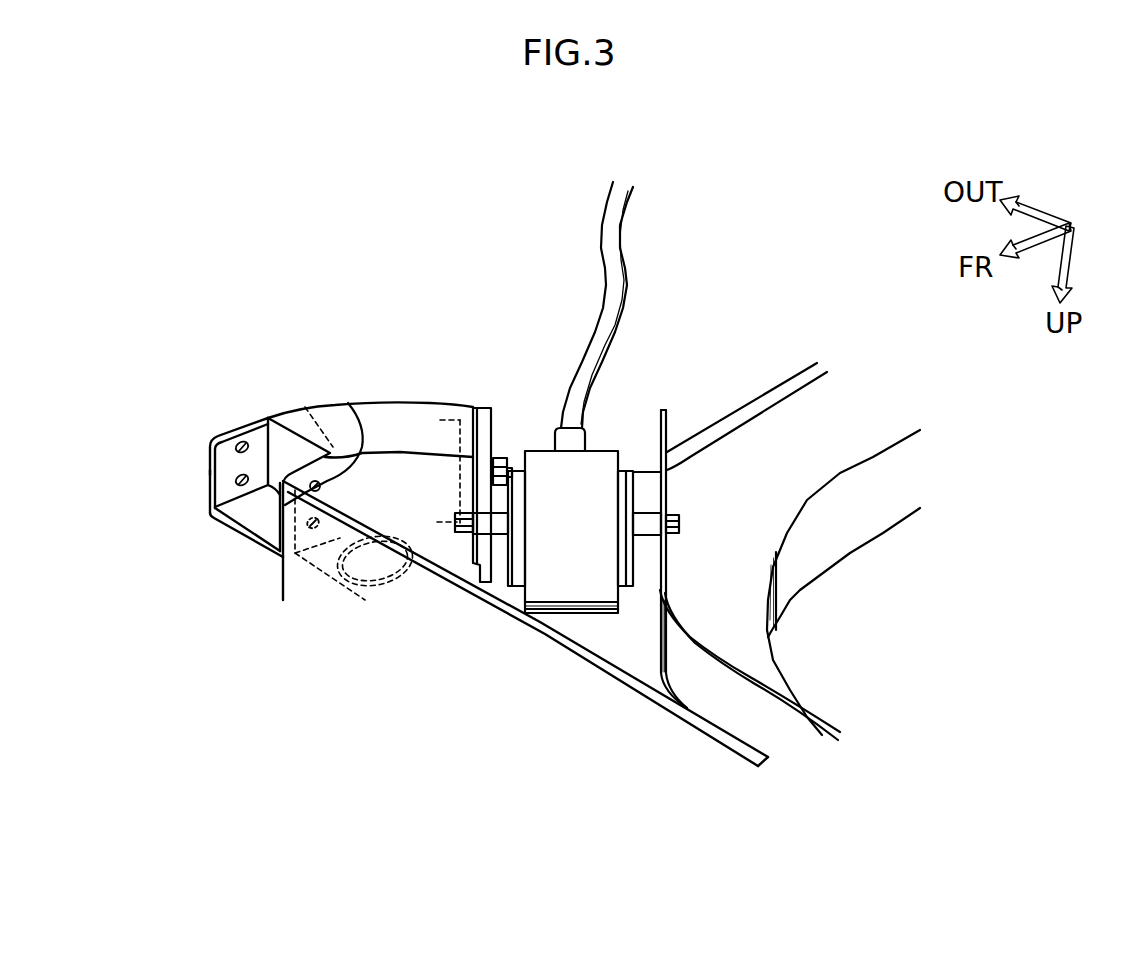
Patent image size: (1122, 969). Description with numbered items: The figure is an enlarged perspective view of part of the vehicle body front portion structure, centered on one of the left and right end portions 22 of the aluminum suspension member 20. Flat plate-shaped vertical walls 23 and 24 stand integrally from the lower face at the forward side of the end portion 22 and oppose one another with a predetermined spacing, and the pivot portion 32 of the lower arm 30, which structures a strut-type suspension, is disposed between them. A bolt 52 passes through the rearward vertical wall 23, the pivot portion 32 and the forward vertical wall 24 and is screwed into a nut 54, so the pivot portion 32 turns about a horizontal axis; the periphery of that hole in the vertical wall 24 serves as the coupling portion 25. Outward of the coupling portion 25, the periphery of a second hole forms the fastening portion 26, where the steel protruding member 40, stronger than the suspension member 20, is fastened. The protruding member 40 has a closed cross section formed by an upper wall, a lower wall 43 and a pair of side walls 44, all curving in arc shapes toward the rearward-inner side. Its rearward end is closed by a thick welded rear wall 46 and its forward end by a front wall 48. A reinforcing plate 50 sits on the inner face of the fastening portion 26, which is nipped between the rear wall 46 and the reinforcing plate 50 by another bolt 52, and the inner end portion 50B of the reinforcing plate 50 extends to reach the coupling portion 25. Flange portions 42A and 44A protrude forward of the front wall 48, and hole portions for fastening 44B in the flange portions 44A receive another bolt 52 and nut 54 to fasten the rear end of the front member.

The suspension member 20 is at (800, 596).
The end portions 22 is at (790, 427).
The vertical wall 23 is at (678, 615).
The vertical wall 24 is at (478, 552).
The coupling portion 25 is at (460, 554).
The fastening portion 26 is at (465, 415).
The lower arm 30 is at (625, 252).
The pivot portion 32 is at (585, 620).
The protruding member 40 is at (316, 400).
The flange portion 42A is at (238, 533).
The lower wall 43 is at (373, 417).
The side walls 44 is at (305, 407).
The flange portions 44A is at (208, 473).
The hole portion for fastening 44B is at (347, 403).
The rear wall 46 is at (463, 443).
The front wall 48 is at (288, 450).
The reinforcing plate 50 is at (496, 425).
The inner side end portion 50B is at (478, 560).
The bolt 52 is at (680, 517).
The nut 54 is at (413, 538).